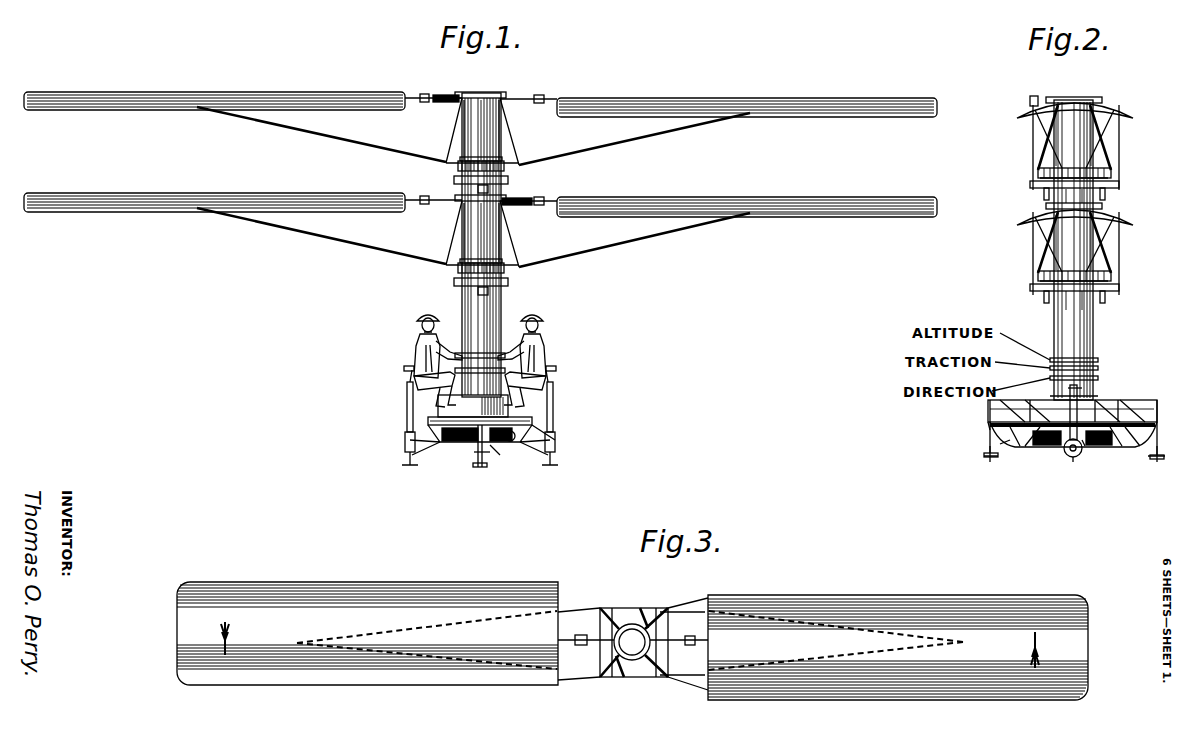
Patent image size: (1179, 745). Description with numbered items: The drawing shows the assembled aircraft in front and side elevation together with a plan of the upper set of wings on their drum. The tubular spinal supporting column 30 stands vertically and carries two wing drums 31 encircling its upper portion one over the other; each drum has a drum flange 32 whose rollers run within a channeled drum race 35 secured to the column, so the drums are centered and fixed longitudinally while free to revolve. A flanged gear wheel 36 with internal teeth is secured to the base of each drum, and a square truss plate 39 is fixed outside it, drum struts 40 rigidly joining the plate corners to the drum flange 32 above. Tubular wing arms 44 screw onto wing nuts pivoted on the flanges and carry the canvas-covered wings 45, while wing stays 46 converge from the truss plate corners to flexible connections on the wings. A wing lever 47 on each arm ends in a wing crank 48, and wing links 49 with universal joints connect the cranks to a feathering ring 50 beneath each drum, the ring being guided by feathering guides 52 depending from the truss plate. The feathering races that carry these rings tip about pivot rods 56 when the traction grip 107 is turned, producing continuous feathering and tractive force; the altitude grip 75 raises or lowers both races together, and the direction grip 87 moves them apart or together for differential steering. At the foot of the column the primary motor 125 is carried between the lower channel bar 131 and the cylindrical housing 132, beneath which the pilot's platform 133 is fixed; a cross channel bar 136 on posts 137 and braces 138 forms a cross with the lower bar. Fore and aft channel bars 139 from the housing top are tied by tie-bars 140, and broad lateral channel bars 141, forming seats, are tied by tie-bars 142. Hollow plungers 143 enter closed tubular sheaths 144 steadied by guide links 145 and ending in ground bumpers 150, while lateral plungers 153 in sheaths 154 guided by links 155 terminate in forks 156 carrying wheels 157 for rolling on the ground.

In FIG. 1, the spinal supporting column 30 is at (480, 245).
In FIG. 2, the spinal supporting column 30 is at (1093, 340).
In FIG. 1, the wing drum 31 is at (470, 126).
In FIG. 2, the wing drum 31 is at (1073, 189).
In FIG. 3, the wing drum 31 is at (632, 642).
In FIG. 1, the drum flange 32 is at (473, 406).
In FIG. 3, the drum flange 32 is at (620, 620).
In FIG. 1, the drum race 35 is at (484, 92).
In FIG. 2, the drum race 35 is at (1072, 96).
In FIG. 1, the flanged gear wheel 36 is at (460, 166).
In FIG. 2, the flanged gear wheel 36 is at (1112, 175).
In FIG. 1, the truss plate 39 is at (460, 160).
In FIG. 2, the truss plate 39 is at (1038, 174).
In FIG. 3, the truss plate 39 is at (680, 612).
In FIG. 1, the drum strut 40 is at (450, 145).
In FIG. 2, the drum strut 40 is at (1045, 125).
In FIG. 3, the drum strut 40 is at (604, 612).
In FIG. 1, the wing arm 44 is at (410, 96).
In FIG. 3, the wing arm 44 is at (580, 636).
In FIG. 1, the wing 45 is at (296, 92).
In FIG. 2, the wing 45 is at (1022, 112).
In FIG. 3, the wing 45 is at (632, 641).
In FIG. 1, the wing stay 46 is at (300, 135).
In FIG. 2, the wing stay 46 is at (1040, 140).
In FIG. 3, the wing stay 46 is at (512, 660).
In FIG. 1, the wing lever 47 is at (445, 95).
In FIG. 2, the wing lever 47 is at (1032, 96).
In FIG. 3, the wing lever 47 is at (660, 606).
In FIG. 3, the wing crank 48 is at (640, 606).
In FIG. 1, the wing link 49 is at (486, 130).
In FIG. 2, the wing link 49 is at (1032, 153).
In FIG. 1, the feathering ring 50 is at (508, 180).
In FIG. 2, the feathering ring 50 is at (1032, 186).
In FIG. 1, the feathering guide 52 is at (478, 190).
In FIG. 2, the feathering guide 52 is at (1044, 197).
In FIG. 2, the pivot rod 56 is at (1119, 187).
In FIG. 2, the altitude grip 75 is at (1098, 360).
In FIG. 2, the direction grip 87 is at (1098, 378).
In FIG. 2, the traction grip 107 is at (1098, 368).
In FIG. 1, the primary motor 125 is at (470, 450).
In FIG. 2, the primary motor 125 is at (1068, 456).
In FIG. 2, the lower channel bar 131 is at (1100, 448).
In FIG. 2, the cylindrical housing 132 is at (1072, 412).
In FIG. 2, the pilot's platform 133 is at (1000, 440).
In FIG. 1, the cross channel bar 136 is at (548, 438).
In FIG. 2, the post 137 is at (1070, 462).
In FIG. 1, the brace 138 is at (430, 435).
In FIG. 2, the fore and aft channel bar 139 is at (990, 404).
In FIG. 2, the tie-bar 140 is at (998, 435).
In FIG. 2, the lateral channel bar 141 is at (1068, 390).
In FIG. 1, the tie-bar 142 is at (428, 420).
In FIG. 1, the hollow plunger 143 is at (510, 457).
In FIG. 2, the hollow plunger 143 is at (990, 418).
In FIG. 1, the tubular sheath 144 is at (496, 455).
In FIG. 2, the tubular sheath 144 is at (986, 462).
In FIG. 2, the guide link 145 is at (1005, 448).
In FIG. 1, the ground bumper 150 is at (481, 468).
In FIG. 2, the ground bumper 150 is at (990, 460).
In FIG. 1, the plunger 153 is at (404, 370).
In FIG. 1, the sheath 154 is at (407, 405).
In FIG. 2, the sheath 154 is at (1098, 396).
In FIG. 1, the link 155 is at (428, 448).
In FIG. 1, the fork 156 is at (405, 447).
In FIG. 1, the wheel 157 is at (408, 462).